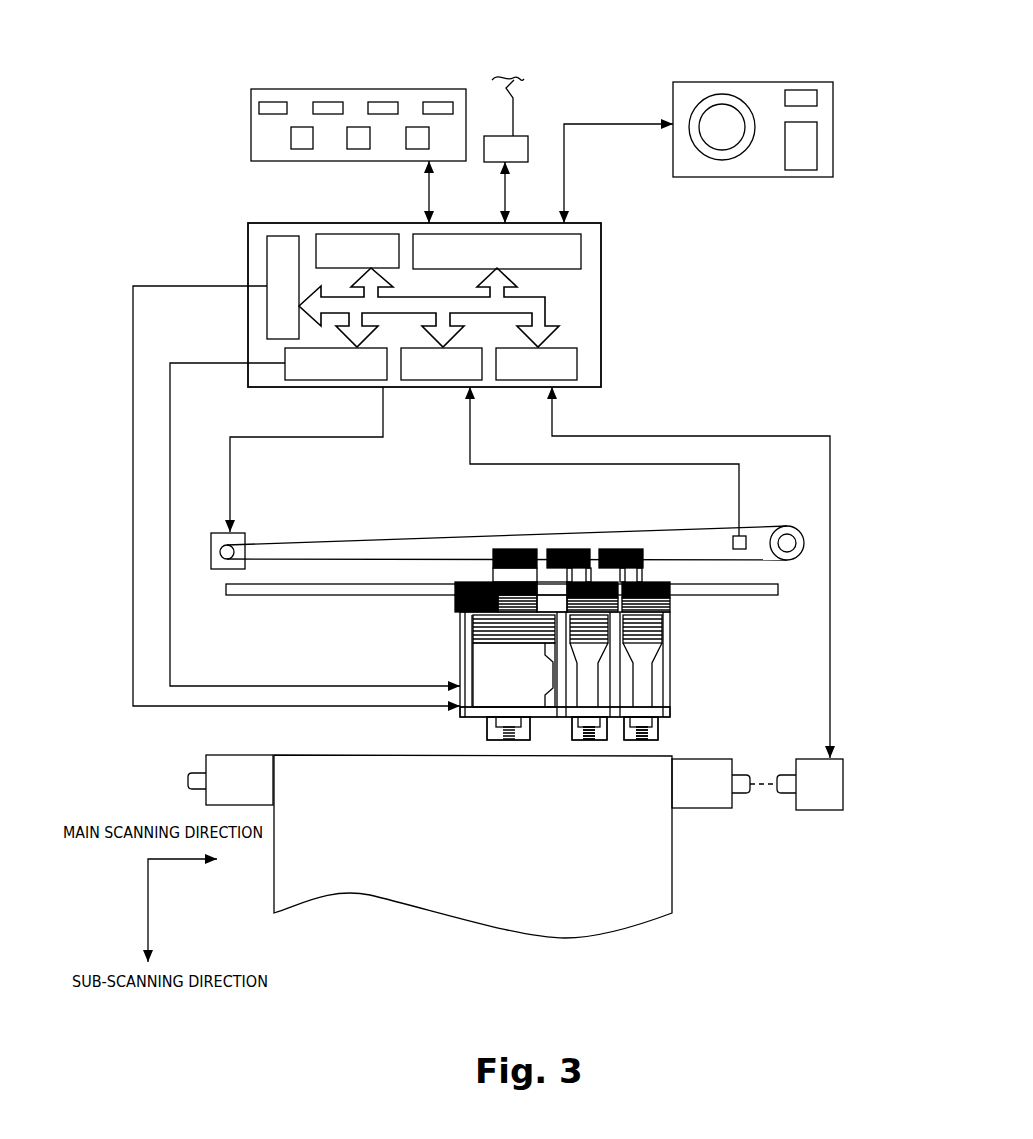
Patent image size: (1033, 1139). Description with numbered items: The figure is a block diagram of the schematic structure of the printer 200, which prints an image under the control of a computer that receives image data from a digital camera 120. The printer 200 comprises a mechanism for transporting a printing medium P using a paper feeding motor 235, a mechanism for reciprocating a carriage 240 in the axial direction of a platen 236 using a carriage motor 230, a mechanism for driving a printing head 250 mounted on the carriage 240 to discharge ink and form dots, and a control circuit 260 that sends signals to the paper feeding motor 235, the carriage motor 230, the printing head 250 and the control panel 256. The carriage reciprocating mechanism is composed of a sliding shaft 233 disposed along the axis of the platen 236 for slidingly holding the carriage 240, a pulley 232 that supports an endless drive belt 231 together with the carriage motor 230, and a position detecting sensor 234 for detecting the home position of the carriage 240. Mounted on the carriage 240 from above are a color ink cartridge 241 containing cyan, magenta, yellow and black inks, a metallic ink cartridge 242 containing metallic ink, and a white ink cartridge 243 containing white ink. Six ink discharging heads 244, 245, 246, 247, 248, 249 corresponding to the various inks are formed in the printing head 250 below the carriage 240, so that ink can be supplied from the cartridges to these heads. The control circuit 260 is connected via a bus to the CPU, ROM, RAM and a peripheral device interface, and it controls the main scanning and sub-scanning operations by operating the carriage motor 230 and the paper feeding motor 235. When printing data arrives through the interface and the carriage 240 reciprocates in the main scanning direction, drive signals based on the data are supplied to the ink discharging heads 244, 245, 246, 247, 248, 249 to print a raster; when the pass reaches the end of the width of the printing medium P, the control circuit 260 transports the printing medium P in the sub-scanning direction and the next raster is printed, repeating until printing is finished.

The printer 200 is at (165, 90).
The control panel 256 is at (404, 89).
The digital camera 120 is at (745, 82).
The control circuit 260 is at (601, 283).
The carriage motor 230 is at (215, 570).
The endless drive belt 231 is at (302, 541).
The pulley 232 is at (770, 527).
The sliding shaft 233 is at (283, 590).
The position detecting sensor 234 is at (733, 540).
The paper feeding motor 235 is at (818, 810).
The platen 236 is at (702, 808).
The carriage 240 is at (683, 679).
The color ink cartridge 241 is at (489, 681).
The metallic ink cartridge 242 is at (587, 658).
The white ink cartridge 243 is at (643, 659).
The ink discharging head 244 is at (505, 745).
The ink discharging head 245 is at (508, 728).
The ink discharging head 246 is at (589, 728).
The ink discharging head 247 is at (641, 728).
The ink discharging head 248 is at (590, 750).
The ink discharging head 249 is at (648, 748).
The printing head 250 is at (670, 714).
The printing medium P is at (673, 894).